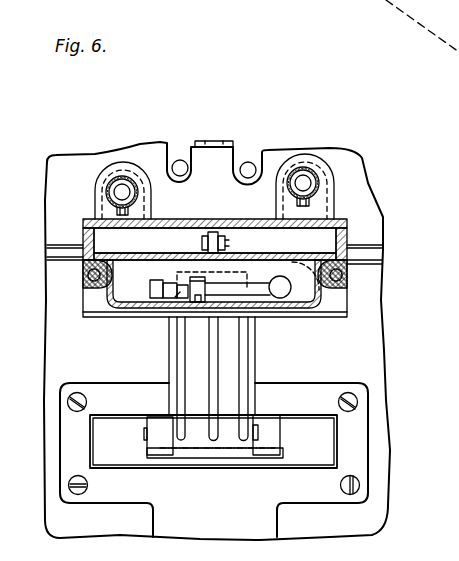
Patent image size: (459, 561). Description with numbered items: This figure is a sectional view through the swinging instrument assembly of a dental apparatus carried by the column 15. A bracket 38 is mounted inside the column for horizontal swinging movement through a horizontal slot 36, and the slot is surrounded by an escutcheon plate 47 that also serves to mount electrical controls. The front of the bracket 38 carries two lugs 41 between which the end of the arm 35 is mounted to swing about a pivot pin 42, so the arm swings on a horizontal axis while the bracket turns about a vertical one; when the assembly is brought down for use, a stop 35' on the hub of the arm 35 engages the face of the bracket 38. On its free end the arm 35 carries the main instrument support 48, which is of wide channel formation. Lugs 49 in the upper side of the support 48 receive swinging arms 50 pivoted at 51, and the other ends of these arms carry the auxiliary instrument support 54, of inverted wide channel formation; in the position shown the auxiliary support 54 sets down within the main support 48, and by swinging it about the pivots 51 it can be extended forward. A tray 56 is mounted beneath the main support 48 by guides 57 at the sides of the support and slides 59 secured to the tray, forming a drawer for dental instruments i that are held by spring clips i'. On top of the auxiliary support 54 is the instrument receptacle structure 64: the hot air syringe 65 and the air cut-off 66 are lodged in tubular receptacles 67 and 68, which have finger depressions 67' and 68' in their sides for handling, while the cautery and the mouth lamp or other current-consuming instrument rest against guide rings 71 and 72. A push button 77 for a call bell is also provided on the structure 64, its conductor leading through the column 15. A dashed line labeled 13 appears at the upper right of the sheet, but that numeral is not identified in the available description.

The machine frame (dashed outline) 13 is at (369, 26).
The column 15 is at (388, 495).
The arm 35 is at (197, 379).
The stop 35' is at (205, 472).
The horizontal slot 36 is at (248, 470).
The bracket 38 is at (301, 418).
The lugs 41 is at (160, 457).
The pivot pin 42 is at (144, 436).
The escutcheon plate 47 is at (103, 391).
The instrument support 48 is at (347, 238).
The lugs 49 is at (202, 242).
The swinging arms 50 is at (216, 232).
The pivots 51 is at (229, 243).
The auxiliary instrument support 54 is at (172, 227).
The tray 56 is at (110, 290).
The guides 57 is at (83, 266).
The slides 59 is at (98, 282).
The instrument receptacle structure 64 is at (256, 149).
The hot air syringe 65 is at (288, 188).
The air cut-off 66 is at (107, 184).
The tubular receptacle 67 is at (319, 183).
The finger depression 67' is at (323, 190).
The tubular receptacle 68 is at (123, 172).
The finger depression 68' is at (99, 194).
The guide ring 71 is at (246, 178).
The guide ring 72 is at (183, 176).
The push button 77 is at (220, 141).
The dental instruments i is at (247, 304).
The spring clips i' is at (174, 310).